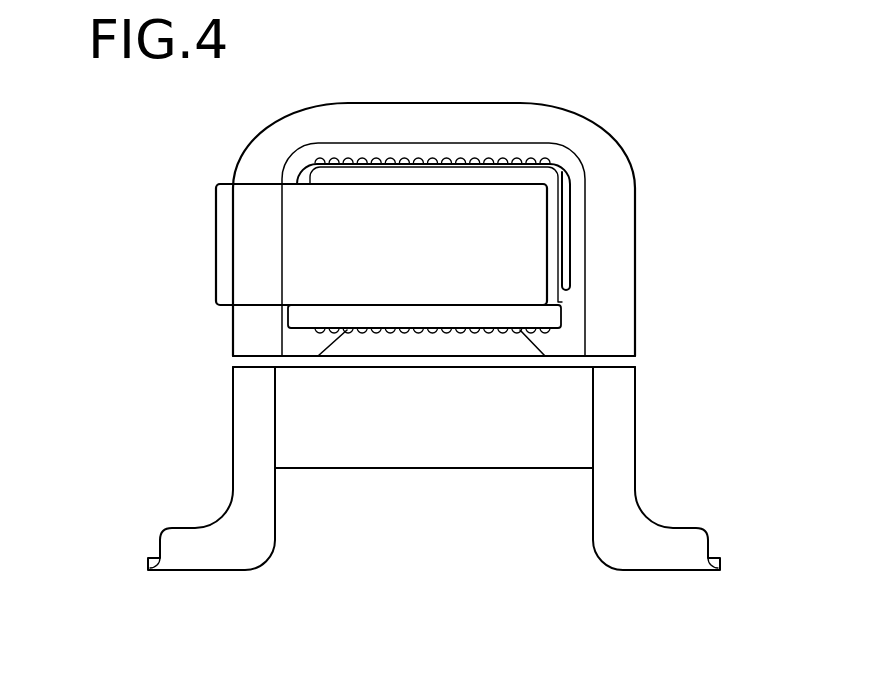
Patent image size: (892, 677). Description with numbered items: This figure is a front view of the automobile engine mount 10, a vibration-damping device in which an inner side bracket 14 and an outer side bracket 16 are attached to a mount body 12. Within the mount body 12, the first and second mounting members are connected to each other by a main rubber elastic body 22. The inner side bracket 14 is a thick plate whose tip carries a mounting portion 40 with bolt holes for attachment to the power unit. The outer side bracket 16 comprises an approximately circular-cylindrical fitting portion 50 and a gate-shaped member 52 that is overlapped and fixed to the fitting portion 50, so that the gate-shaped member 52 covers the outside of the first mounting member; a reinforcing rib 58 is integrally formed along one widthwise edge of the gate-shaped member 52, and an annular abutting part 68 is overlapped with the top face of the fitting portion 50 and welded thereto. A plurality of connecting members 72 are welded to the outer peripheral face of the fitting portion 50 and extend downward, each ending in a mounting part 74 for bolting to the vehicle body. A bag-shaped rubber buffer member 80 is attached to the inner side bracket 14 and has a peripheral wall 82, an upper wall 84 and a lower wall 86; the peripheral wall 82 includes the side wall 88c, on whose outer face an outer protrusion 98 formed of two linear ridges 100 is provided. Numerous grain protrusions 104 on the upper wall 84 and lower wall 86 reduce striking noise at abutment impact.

The engine mount 10 is at (668, 105).
The mount body 12 is at (543, 345).
The inner side bracket 14 is at (215, 200).
The outer side bracket 16 is at (650, 250).
The main rubber elastic body 22 is at (480, 318).
The mounting portion 40 is at (462, 195).
The fitting portion 50 is at (362, 458).
The gate-shaped member 52 is at (283, 117).
The reinforcing rib 58 is at (522, 125).
The abutting part 68 is at (243, 362).
The connecting member 72 is at (232, 448).
The mounting part 74 is at (212, 557).
The rubber buffer member 80 is at (577, 179).
The peripheral wall 82 is at (310, 169).
The upper wall 84 is at (480, 175).
The lower wall 86 is at (480, 345).
The side wall 88c is at (552, 250).
The outer protrusion 98 is at (572, 252).
The linear ridge 100 is at (565, 273).
The grain protrusion 104 is at (406, 161).